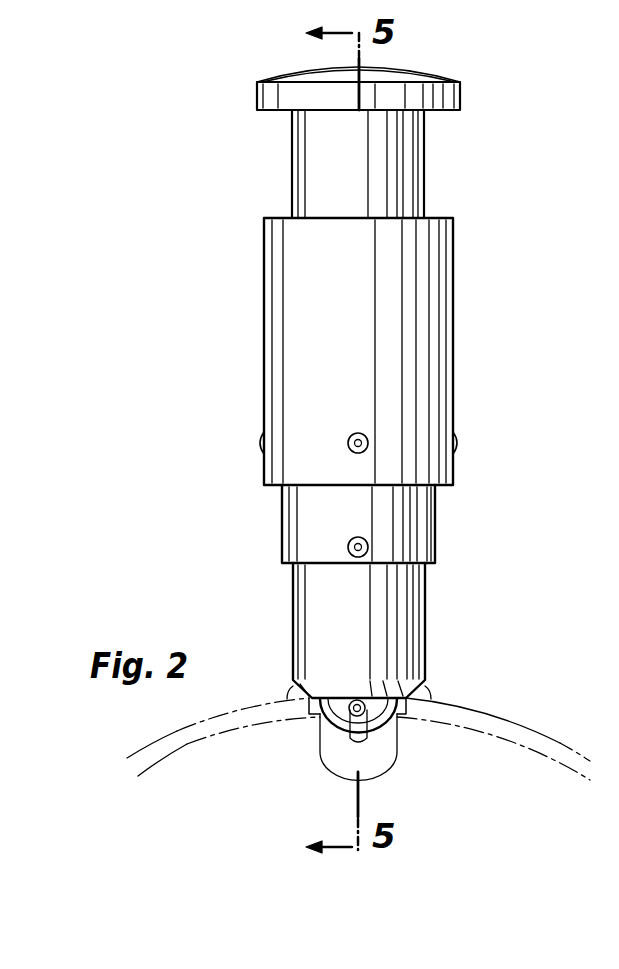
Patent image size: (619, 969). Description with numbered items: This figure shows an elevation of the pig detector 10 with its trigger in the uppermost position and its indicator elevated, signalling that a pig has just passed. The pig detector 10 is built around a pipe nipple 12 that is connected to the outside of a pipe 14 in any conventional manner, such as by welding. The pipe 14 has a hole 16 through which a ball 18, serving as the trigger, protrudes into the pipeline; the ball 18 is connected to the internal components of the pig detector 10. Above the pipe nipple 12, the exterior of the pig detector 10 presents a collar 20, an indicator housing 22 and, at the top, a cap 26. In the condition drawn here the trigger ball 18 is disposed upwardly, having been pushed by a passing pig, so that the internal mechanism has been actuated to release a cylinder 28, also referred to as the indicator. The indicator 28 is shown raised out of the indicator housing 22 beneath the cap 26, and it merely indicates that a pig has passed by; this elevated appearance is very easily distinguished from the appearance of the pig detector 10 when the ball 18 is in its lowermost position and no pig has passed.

The pig detector 10 is at (468, 352).
The pipe nipple 12 is at (415, 633).
The pipe 14 is at (560, 743).
The hole 16 is at (398, 720).
The ball (trigger) 18 is at (333, 722).
The collar 20 is at (420, 532).
The indicator housing 22 is at (290, 325).
The cap 26 is at (432, 78).
The cylinder (indicator) 28 is at (412, 185).